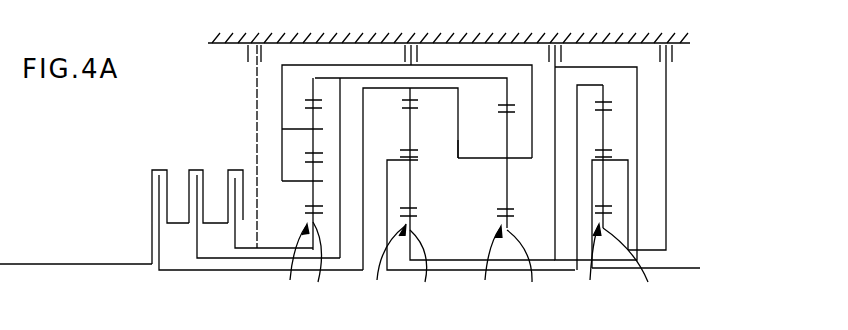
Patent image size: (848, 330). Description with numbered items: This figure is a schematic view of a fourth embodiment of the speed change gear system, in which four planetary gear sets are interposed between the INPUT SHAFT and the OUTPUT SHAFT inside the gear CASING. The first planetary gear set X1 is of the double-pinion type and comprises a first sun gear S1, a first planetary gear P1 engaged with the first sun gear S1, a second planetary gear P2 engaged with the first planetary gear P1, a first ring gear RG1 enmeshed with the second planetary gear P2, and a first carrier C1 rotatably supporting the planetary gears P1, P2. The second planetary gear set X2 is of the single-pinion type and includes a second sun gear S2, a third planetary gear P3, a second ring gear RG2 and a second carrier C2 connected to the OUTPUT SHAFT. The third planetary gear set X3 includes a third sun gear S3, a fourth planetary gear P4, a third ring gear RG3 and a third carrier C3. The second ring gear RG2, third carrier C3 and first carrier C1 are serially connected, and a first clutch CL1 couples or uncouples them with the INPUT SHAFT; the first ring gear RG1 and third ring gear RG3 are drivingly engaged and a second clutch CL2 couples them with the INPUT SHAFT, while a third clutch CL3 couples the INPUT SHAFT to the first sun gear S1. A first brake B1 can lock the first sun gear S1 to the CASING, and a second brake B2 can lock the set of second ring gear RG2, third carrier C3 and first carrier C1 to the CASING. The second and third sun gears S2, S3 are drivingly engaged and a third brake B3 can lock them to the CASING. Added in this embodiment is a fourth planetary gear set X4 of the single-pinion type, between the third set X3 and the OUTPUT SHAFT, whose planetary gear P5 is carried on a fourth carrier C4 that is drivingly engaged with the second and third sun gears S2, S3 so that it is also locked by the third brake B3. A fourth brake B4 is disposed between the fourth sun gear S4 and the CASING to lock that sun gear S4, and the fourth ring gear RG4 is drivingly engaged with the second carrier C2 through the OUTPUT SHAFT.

The gear casing CASING is at (484, 47).
The input shaft INPUT SHAFT is at (83, 287).
The output shaft OUTPUT SHAFT is at (698, 290).
The first clutch CL1 is at (229, 210).
The second clutch CL2 is at (241, 204).
The third clutch CL3 is at (254, 199).
The first brake B1 is at (237, 146).
The second brake B2 is at (422, 55).
The third brake B3 is at (567, 56).
The fourth brake B4 is at (662, 147).
The first ring gear RG1 is at (315, 92).
The second ring gear RG2 is at (412, 93).
The third ring gear RG3 is at (505, 90).
The fourth ring gear RG4 is at (604, 93).
The first carrier C1 is at (305, 178).
The second carrier C2 is at (402, 152).
The third carrier C3 is at (480, 160).
The fourth carrier C4 is at (606, 160).
The first planetary gear P1 is at (310, 190).
The second planetary gear P2 is at (318, 115).
The third planetary gear P3 is at (411, 165).
The fourth planetary gear P4 is at (508, 165).
The fifth planet gear P5 is at (606, 193).
The first sun gear S1 is at (313, 263).
The second sun gear S2 is at (421, 267).
The third sun gear S3 is at (523, 267).
The fourth sun gear S4 is at (631, 266).
The first planetary gear set X1 is at (285, 264).
The second planetary gear set X2 is at (385, 264).
The third planetary gear set X3 is at (488, 265).
The fourth planetary gear set X4 is at (595, 264).